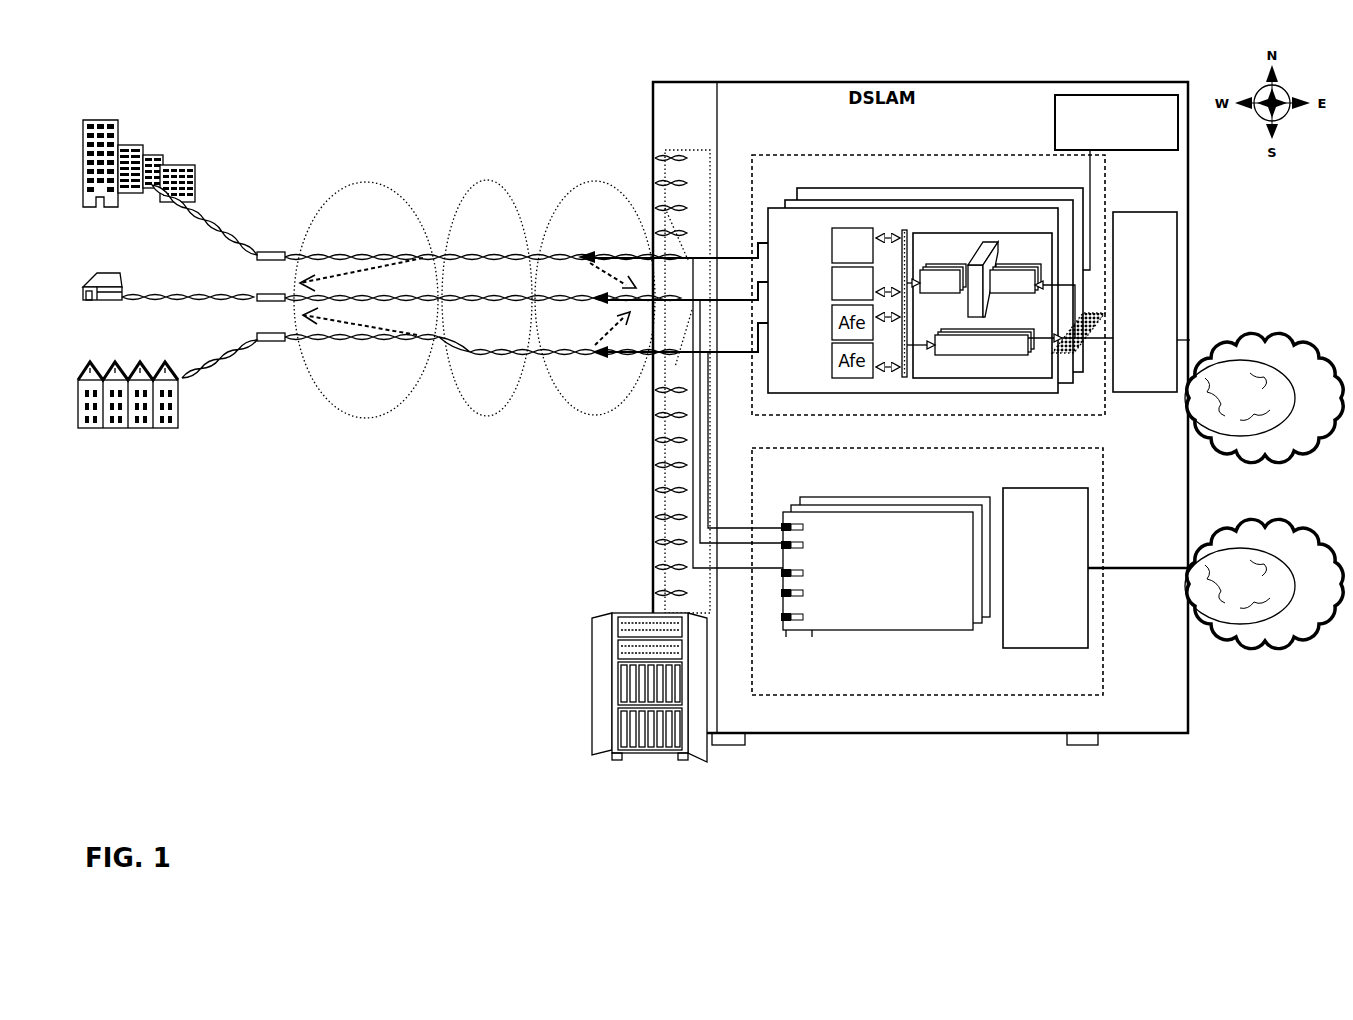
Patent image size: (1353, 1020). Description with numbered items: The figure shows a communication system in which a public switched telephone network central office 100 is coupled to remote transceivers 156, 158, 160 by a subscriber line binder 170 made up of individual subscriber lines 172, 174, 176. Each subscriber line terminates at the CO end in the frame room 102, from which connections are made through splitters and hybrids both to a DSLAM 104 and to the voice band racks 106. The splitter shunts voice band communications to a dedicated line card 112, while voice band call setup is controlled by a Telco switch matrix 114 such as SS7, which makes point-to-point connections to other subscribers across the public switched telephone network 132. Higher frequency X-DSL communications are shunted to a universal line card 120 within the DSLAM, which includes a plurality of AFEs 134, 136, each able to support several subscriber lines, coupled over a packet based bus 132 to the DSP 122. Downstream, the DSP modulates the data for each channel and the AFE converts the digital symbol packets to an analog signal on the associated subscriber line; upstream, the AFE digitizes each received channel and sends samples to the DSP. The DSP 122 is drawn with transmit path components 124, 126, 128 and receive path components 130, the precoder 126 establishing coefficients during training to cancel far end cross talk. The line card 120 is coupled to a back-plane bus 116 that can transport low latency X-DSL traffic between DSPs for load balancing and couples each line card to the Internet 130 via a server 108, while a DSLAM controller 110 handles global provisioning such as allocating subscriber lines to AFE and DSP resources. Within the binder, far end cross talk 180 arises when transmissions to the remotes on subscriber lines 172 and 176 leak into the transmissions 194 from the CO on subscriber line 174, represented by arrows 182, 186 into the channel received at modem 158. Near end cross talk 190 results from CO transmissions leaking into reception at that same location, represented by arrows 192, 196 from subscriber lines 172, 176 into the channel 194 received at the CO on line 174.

The central office 100 is at (608, 613).
The frame room 102 is at (678, 150).
The DSLAM 104 is at (755, 155).
The voice band racks 106 is at (1105, 673).
The server 108 is at (1175, 385).
The DSLAM controller 110 is at (1055, 118).
The line card 112 is at (927, 613).
The Telco switch matrix 114 is at (1042, 650).
The back-plane bus 116 is at (1097, 347).
The line card 120 is at (770, 207).
The DSP 122 is at (1003, 233).
The transmit path component 124 is at (1000, 294).
The precoder 126 is at (998, 256).
The transmit path component 128 is at (960, 294).
The receive path components / Internet 130 is at (1262, 318).
The packet based bus / public switched telephone network 132 is at (903, 229).
The AFE 134 is at (830, 232).
The AFE 136 is at (830, 270).
The remote transceiver 156 is at (172, 162).
The remote transceiver 158 is at (124, 282).
The remote transceiver 160 is at (132, 375).
The subscriber line binder 170 is at (493, 180).
The subscriber line 172 is at (495, 256).
The subscriber line 174 is at (497, 298).
The subscriber line 176 is at (500, 351).
The far end cross talk 180 is at (393, 413).
The FEXT leakage arrow 182 is at (378, 272).
The FEXT leakage arrow 186 is at (387, 323).
The near end cross talk 190 is at (583, 409).
The NEXT leakage arrow 192 is at (600, 282).
The transmissions / channel 194 is at (713, 284).
The NEXT leakage arrow 196 is at (606, 330).